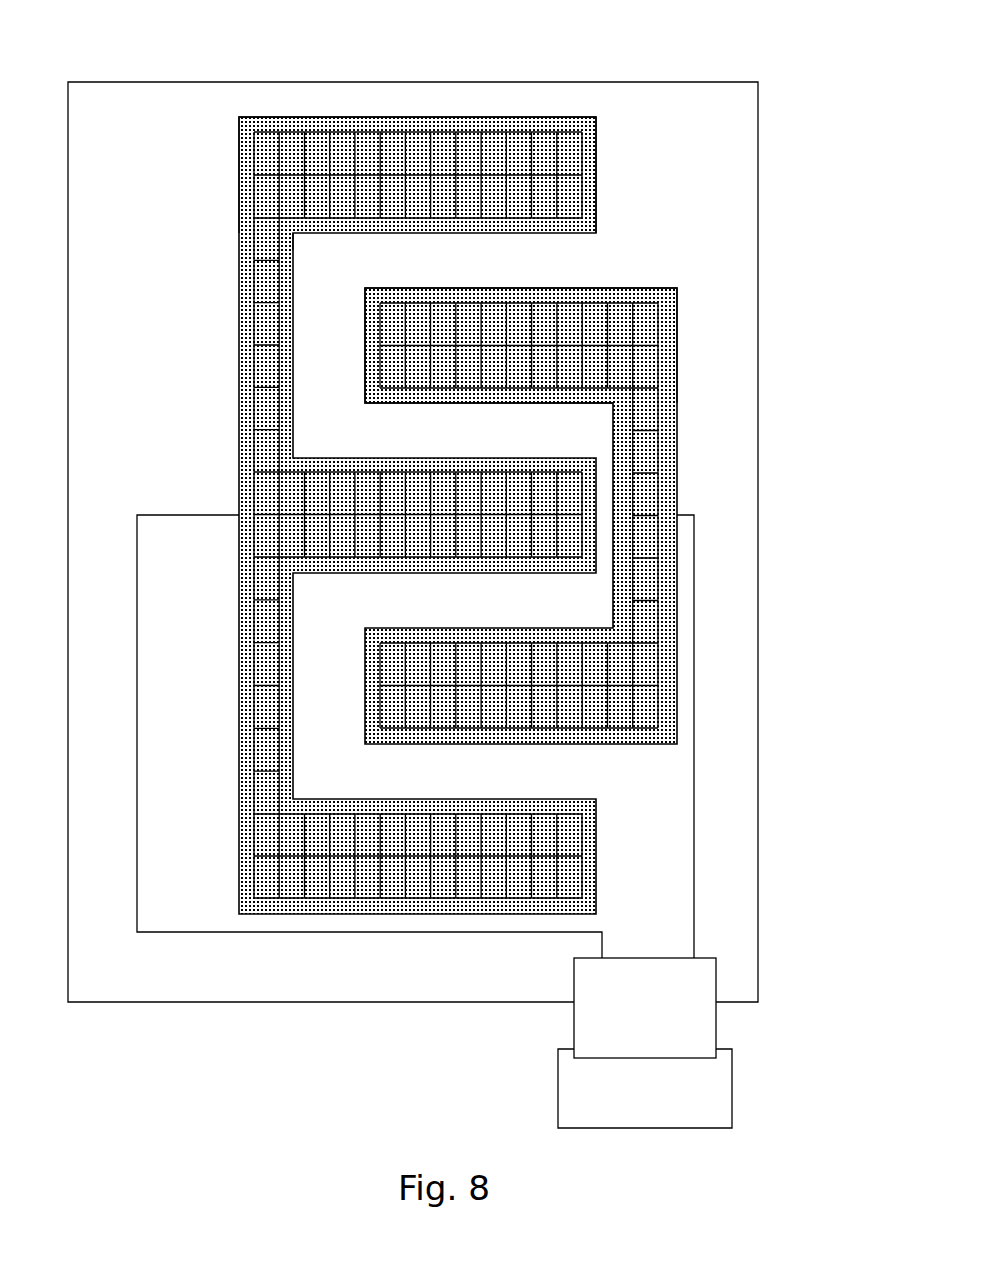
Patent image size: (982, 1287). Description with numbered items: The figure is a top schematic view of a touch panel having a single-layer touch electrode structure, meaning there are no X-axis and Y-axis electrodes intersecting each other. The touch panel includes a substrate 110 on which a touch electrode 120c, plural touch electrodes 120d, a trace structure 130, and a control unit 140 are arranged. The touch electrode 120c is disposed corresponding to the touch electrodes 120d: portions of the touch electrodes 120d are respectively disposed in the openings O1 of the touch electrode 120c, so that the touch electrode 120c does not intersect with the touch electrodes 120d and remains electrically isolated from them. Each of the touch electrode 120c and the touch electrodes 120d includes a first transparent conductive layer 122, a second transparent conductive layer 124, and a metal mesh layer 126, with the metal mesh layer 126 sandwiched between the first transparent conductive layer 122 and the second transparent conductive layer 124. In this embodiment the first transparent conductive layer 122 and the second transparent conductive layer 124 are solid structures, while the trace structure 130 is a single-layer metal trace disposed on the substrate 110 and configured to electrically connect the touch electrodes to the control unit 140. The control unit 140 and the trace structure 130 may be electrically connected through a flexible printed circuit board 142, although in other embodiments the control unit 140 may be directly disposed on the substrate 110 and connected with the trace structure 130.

The substrate 110 is at (178, 97).
The touch electrode 120c is at (425, 39).
The touch electrodes 120d is at (813, 243).
The first transparent conductive layer 122 is at (308, 117).
The second transparent conductive layer 124 is at (395, 127).
The metal mesh layer 126 is at (347, 131).
The openings O1 is at (289, 242).
The trace structure 130 is at (137, 668).
The flexible printed circuit board 142 is at (708, 1025).
The control unit 140 is at (722, 1090).